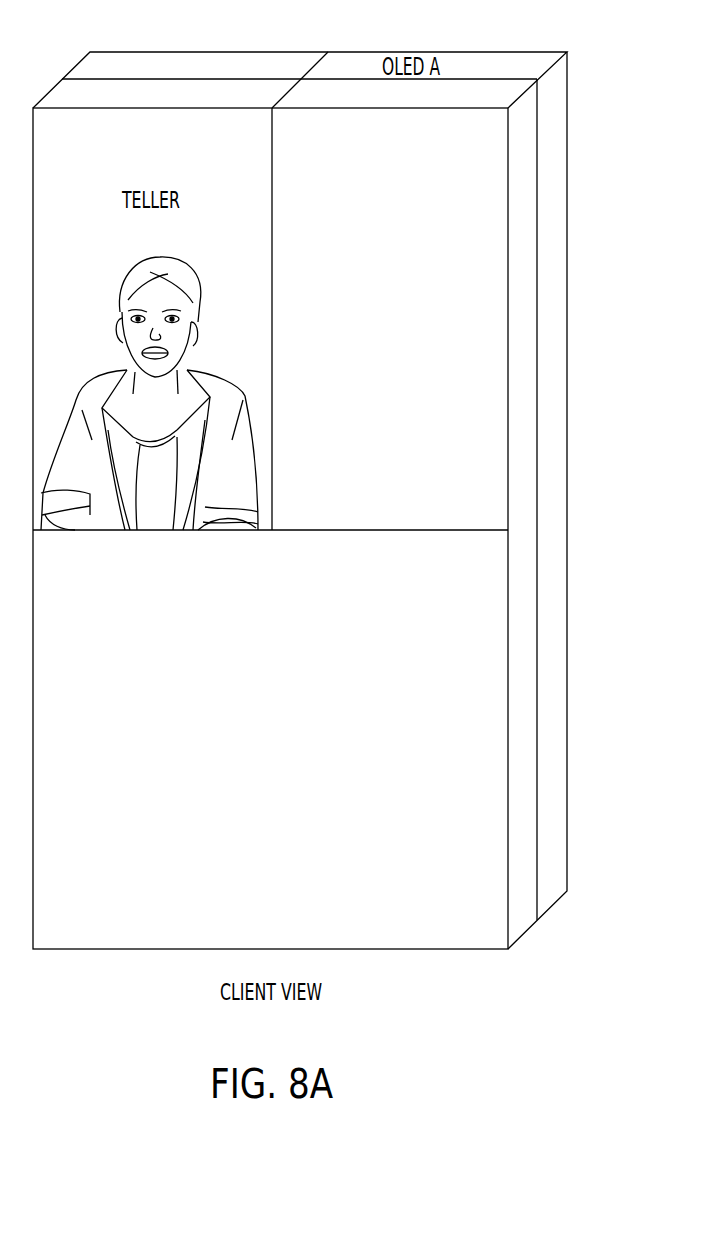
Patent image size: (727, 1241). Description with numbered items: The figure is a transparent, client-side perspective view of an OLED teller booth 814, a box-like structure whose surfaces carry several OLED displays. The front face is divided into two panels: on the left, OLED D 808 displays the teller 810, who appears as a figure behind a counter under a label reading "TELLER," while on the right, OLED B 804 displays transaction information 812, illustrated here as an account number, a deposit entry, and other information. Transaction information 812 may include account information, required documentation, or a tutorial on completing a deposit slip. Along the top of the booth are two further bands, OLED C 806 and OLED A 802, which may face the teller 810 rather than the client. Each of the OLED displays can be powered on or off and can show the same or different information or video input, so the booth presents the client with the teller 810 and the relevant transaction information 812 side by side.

The OLED A 802 is at (495, 67).
The OLED B 804 is at (447, 97).
The OLED C 806 is at (263, 67).
The OLED D 808 is at (212, 97).
The teller 810 is at (102, 370).
The transaction information 812 is at (458, 285).
The OLED teller booth 814 is at (462, 552).